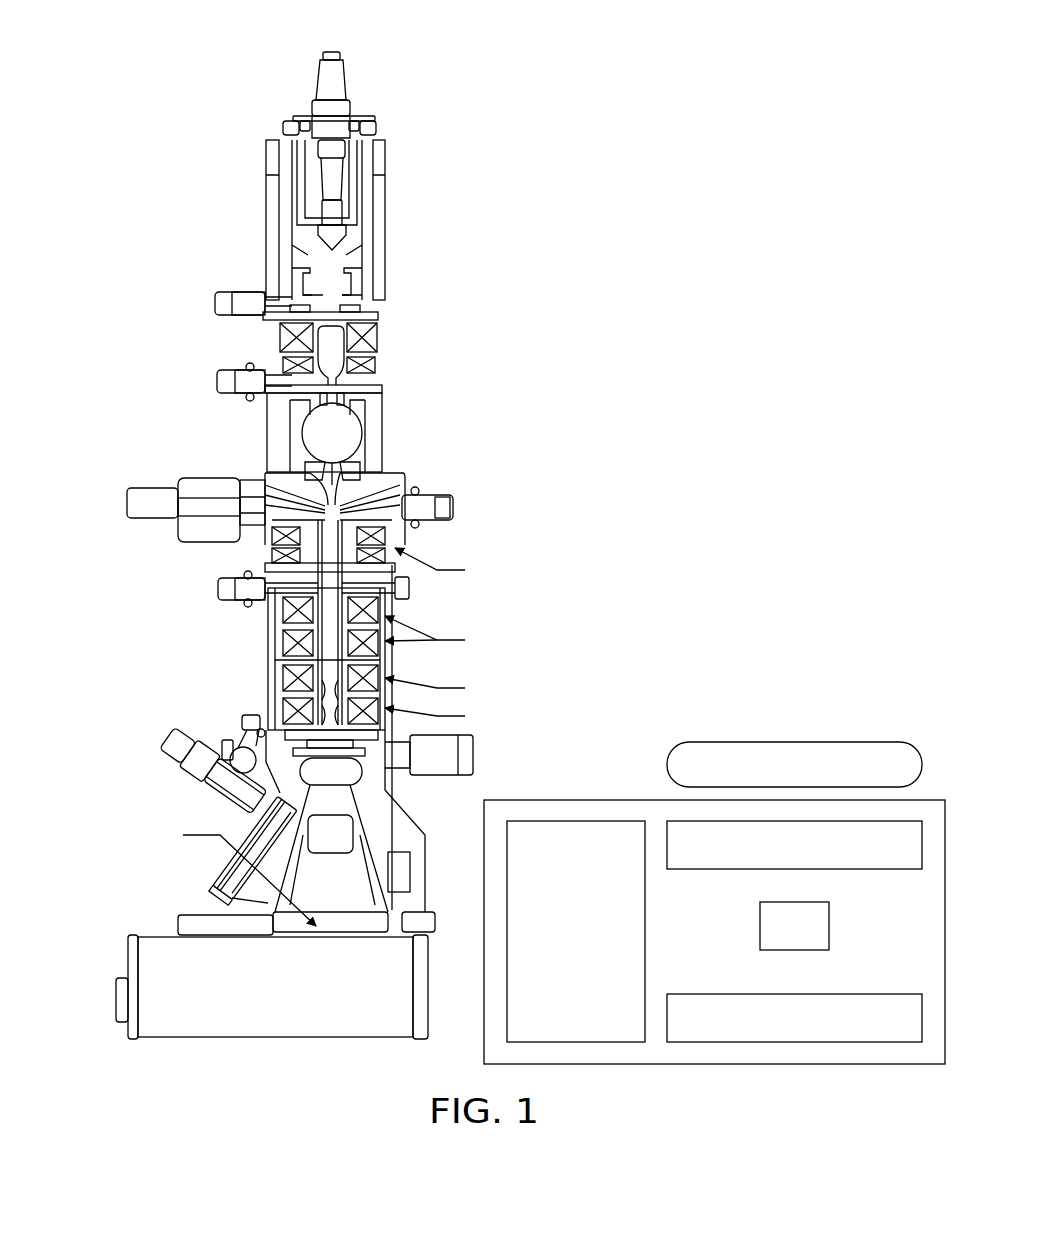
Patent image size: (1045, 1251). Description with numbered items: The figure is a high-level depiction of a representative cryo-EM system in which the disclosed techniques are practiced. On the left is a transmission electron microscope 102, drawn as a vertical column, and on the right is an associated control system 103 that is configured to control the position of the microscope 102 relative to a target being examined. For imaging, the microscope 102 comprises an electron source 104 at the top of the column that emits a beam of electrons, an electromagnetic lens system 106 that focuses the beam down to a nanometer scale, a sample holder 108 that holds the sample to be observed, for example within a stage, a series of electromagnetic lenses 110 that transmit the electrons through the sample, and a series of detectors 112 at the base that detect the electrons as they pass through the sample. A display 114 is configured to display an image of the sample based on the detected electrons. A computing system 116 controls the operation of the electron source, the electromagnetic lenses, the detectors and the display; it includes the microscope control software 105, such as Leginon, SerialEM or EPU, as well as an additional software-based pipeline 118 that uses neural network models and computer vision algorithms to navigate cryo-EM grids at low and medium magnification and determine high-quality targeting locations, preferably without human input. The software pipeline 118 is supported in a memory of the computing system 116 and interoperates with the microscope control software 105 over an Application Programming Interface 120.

The transmission electron microscope 102 is at (455, 57).
The electron source 104 is at (294, 96).
The electromagnetic lens system 106 is at (405, 271).
The sample holder 108 is at (416, 461).
The series of electromagnetic lenses 110 is at (516, 540).
The series of detectors 112 is at (240, 1057).
The display 114 is at (794, 742).
The computing system 116 is at (739, 1068).
The control system 103 is at (557, 980).
The microscope control software 105 is at (863, 869).
The software-based pipeline 118 is at (863, 994).
The Application Programming Interface 120 is at (760, 925).